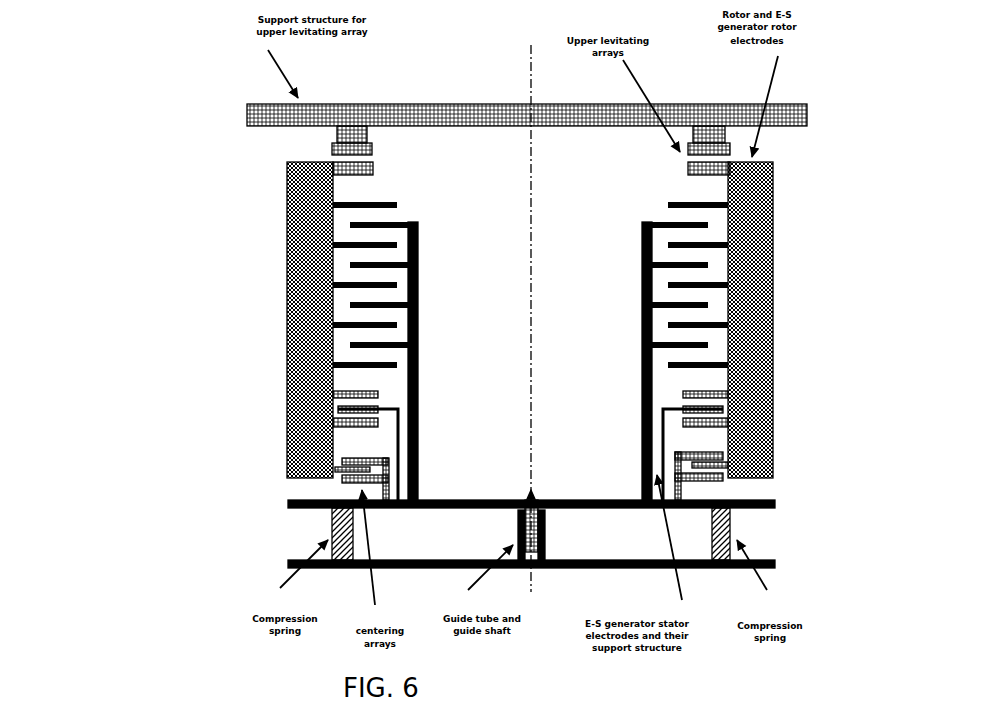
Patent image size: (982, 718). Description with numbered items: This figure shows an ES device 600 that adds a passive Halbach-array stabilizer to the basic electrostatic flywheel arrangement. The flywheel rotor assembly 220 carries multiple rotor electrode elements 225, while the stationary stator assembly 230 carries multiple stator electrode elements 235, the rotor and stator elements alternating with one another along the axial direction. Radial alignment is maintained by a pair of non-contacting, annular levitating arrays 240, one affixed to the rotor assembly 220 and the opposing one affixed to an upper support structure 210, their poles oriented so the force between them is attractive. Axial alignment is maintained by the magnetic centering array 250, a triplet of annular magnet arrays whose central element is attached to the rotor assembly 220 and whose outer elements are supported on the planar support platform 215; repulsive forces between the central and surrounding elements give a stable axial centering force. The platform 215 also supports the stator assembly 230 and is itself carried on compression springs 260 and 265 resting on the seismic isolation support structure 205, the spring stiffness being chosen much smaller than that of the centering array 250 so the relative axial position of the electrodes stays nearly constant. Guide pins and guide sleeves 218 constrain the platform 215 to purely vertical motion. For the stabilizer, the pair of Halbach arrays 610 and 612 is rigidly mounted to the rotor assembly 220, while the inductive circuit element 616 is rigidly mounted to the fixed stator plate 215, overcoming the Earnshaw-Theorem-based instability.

The ES device 600 is at (100, 62).
The upper support structure 210 is at (475, 103).
The levitating arrays 240 is at (332, 148).
The rotor electrode elements 225 is at (668, 203).
The flywheel rotor assembly 220 is at (776, 259).
The stator assembly 230 is at (418, 284).
The stator electrode elements 235 is at (410, 222).
The Halbach array 610 is at (345, 394).
The Halbach array 612 is at (341, 429).
The inductive circuit element 616 is at (680, 403).
The magnetic centering array 250 is at (362, 497).
The planar support platform 215 is at (775, 502).
The seismic isolation support structure 205 is at (778, 563).
The compression spring 260 is at (330, 530).
The compression spring 265 is at (732, 523).
The guide pins and guide sleeves 218 is at (547, 520).